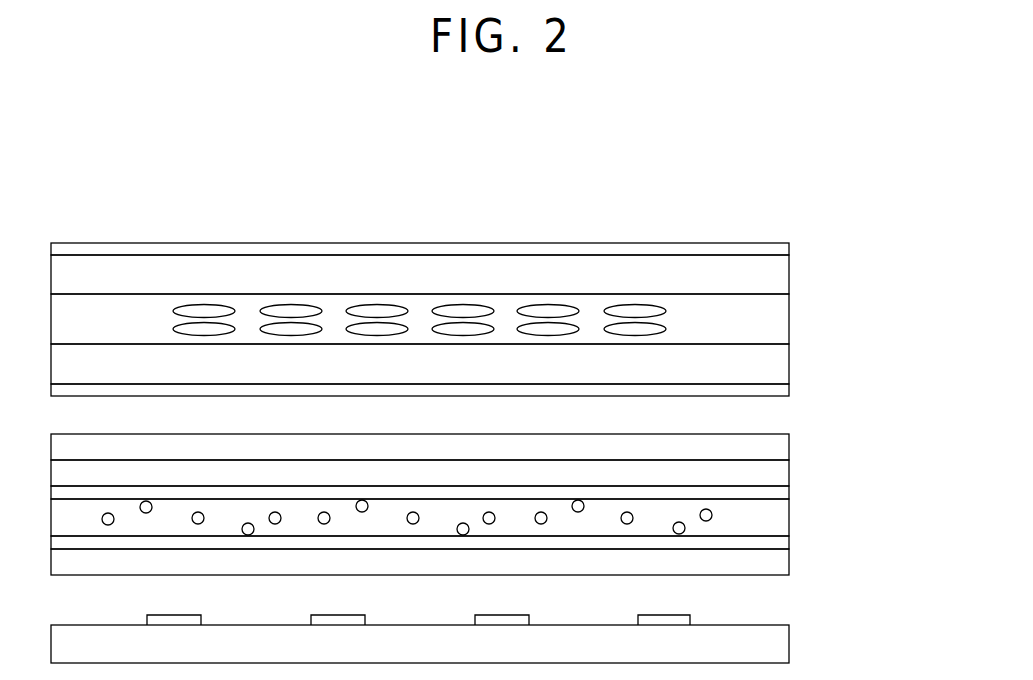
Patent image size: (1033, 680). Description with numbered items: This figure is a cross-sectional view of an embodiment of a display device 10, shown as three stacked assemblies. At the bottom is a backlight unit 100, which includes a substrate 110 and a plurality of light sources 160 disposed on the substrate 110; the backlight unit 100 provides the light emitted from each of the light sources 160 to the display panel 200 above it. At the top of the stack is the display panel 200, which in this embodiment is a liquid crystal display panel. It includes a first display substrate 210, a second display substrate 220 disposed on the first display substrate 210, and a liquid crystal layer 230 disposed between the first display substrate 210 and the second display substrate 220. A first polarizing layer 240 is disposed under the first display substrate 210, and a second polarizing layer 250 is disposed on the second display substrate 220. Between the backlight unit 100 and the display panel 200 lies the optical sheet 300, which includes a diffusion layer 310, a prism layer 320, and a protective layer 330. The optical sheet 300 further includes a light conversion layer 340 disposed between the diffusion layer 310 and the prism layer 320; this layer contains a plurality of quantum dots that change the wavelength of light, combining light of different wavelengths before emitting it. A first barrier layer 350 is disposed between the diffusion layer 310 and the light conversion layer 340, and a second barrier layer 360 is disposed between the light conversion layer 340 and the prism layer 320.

The display device 10 is at (765, 202).
The backlight unit 100 is at (870, 605).
The substrate 110 is at (789, 645).
The light sources 160 is at (688, 616).
The display panel 200 is at (870, 235).
The first display substrate 210 is at (789, 359).
The second display substrate 220 is at (789, 273).
The liquid crystal layer 230 is at (789, 318).
The first polarizing layer 240 is at (789, 386).
The second polarizing layer 250 is at (789, 244).
The optical sheet 300 is at (870, 430).
The diffusion layer 310 is at (789, 565).
The prism layer 320 is at (789, 469).
The protective layer 330 is at (789, 444).
The light conversion layer 340 is at (789, 517).
The first barrier layer 350 is at (789, 543).
The second barrier layer 360 is at (789, 491).